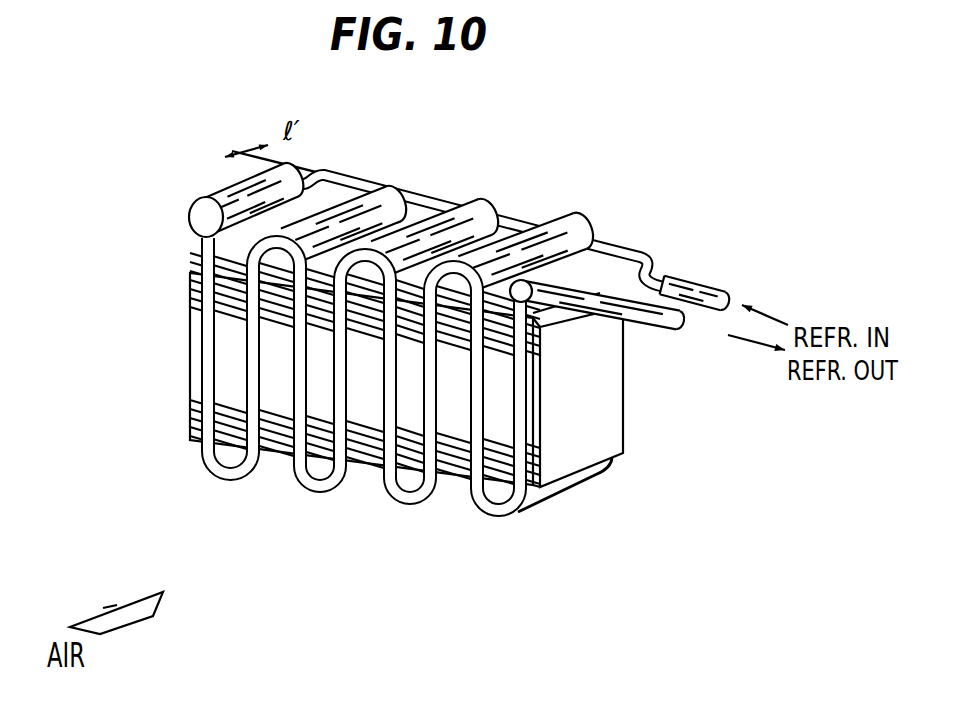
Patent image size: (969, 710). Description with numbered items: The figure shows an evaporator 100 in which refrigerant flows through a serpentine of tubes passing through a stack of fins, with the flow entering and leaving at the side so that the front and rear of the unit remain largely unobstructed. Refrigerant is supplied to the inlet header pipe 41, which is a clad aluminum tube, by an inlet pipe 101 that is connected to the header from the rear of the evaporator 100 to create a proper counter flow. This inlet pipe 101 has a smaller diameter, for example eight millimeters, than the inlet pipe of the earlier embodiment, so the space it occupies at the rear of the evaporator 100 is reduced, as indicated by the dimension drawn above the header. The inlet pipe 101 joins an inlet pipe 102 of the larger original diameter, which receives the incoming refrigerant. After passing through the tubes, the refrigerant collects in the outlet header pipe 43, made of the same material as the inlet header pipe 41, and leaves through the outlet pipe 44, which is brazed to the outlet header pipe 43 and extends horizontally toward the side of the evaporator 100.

The inlet header pipe 41 is at (237, 193).
The outlet header pipe 43 is at (596, 250).
The outlet pipe 44 is at (662, 326).
The evaporator 100 is at (345, 507).
The inlet pipe 101 is at (645, 250).
The inlet pipe 102 is at (706, 290).